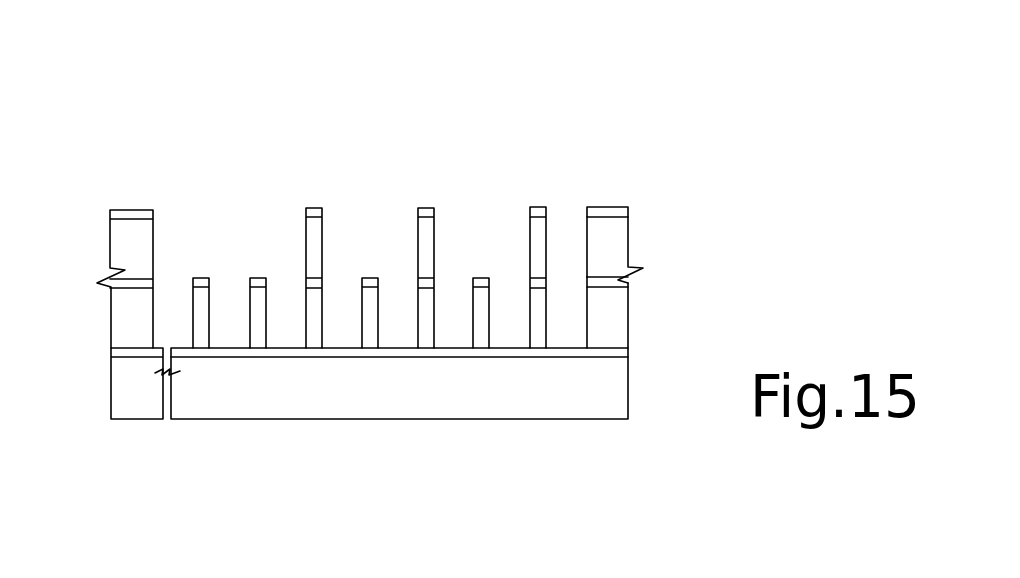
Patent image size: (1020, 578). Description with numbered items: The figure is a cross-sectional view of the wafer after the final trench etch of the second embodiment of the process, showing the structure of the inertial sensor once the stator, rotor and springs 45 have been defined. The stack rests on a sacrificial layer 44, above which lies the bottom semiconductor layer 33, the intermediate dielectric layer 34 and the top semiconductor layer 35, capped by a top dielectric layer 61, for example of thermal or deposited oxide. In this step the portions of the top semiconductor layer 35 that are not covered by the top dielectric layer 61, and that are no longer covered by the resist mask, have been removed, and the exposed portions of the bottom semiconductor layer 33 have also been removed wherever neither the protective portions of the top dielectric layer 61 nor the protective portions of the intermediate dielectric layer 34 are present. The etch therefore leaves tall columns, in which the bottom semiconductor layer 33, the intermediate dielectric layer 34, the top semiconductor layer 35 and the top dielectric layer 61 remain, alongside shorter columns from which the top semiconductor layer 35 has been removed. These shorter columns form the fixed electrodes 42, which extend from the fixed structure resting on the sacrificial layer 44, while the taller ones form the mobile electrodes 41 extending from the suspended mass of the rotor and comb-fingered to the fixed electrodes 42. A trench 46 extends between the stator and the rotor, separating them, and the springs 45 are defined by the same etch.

The bottom semiconductor layer 33 is at (617, 320).
The intermediate dielectric layer 34 is at (607, 282).
The top semiconductor layer 35 is at (617, 245).
The mobile electrodes 41 is at (412, 206).
The fixed electrodes 42 is at (485, 263).
The sacrificial layer 44 is at (617, 349).
The springs 45 is at (202, 345).
The trench 46 is at (228, 253).
The top dielectric layer 61 is at (608, 212).